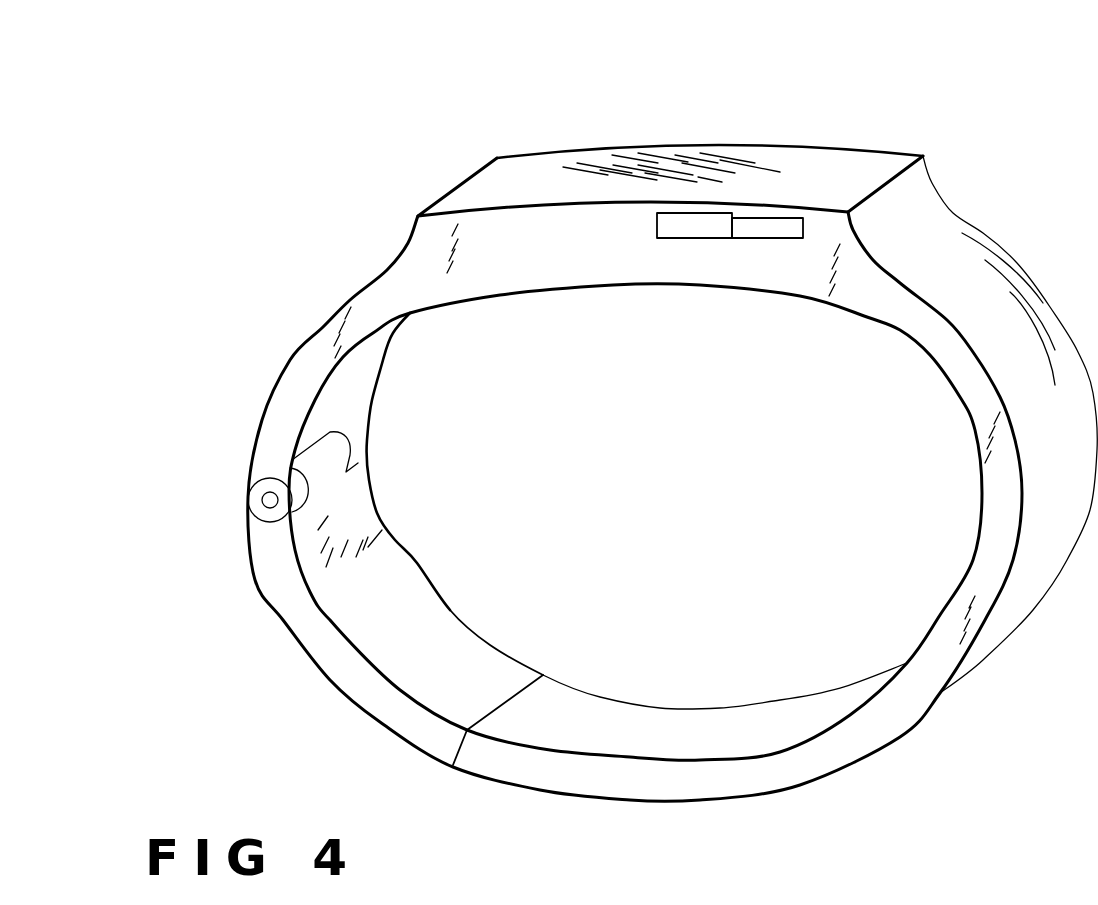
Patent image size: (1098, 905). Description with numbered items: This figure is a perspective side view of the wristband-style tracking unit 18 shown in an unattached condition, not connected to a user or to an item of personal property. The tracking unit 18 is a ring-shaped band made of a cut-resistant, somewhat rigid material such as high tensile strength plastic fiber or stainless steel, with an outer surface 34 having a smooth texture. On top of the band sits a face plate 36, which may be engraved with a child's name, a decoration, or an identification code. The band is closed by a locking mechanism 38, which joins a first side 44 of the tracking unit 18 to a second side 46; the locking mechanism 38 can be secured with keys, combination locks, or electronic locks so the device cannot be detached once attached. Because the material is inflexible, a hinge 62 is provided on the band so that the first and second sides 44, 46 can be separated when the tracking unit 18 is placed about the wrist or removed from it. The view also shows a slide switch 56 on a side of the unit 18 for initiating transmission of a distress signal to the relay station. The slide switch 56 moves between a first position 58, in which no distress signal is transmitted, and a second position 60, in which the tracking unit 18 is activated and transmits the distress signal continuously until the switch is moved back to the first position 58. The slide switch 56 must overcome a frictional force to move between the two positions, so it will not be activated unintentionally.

The tracking unit 18 is at (712, 108).
The outer surface 34 is at (897, 153).
The face plate 36 is at (543, 183).
The locking mechanism 38 is at (453, 765).
The first side 44 is at (395, 710).
The second side 46 is at (518, 770).
The slide switch 56 is at (725, 228).
The first position 58 is at (670, 240).
The second position 60 is at (783, 240).
The hinge 62 is at (270, 500).